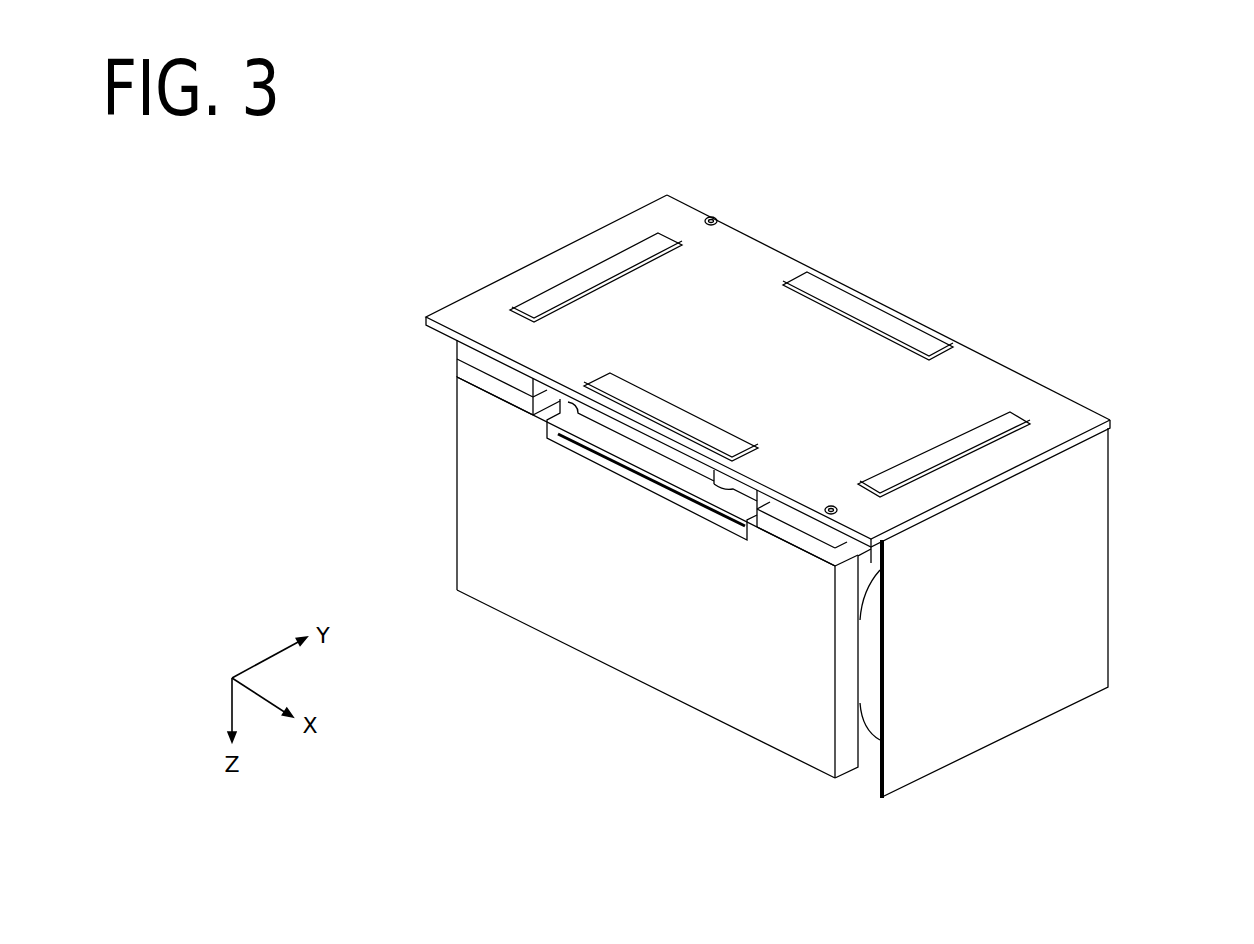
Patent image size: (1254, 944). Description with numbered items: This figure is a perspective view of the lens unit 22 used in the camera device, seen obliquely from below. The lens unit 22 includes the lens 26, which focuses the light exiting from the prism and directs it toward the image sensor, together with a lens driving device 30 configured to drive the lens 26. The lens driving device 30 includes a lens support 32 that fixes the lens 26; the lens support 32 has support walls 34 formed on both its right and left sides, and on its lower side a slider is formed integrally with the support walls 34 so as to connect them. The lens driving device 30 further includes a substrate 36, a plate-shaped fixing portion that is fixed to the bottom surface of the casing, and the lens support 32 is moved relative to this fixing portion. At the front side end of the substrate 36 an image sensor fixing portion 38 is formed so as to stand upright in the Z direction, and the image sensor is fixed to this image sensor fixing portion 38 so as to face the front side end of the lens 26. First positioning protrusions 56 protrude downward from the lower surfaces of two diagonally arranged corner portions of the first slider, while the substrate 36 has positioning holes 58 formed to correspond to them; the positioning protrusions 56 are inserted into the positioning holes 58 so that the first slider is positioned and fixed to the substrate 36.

The lens unit 22 is at (1029, 176).
The lens 26 is at (867, 670).
The lens driving device 30 is at (757, 223).
The lens support 32 is at (714, 730).
The support walls 34 is at (593, 643).
The substrate 36 is at (1005, 382).
The image sensor fixing portion 38 is at (1085, 566).
The first positioning protrusions 56 is at (711, 217).
The positioning holes 58 is at (706, 226).